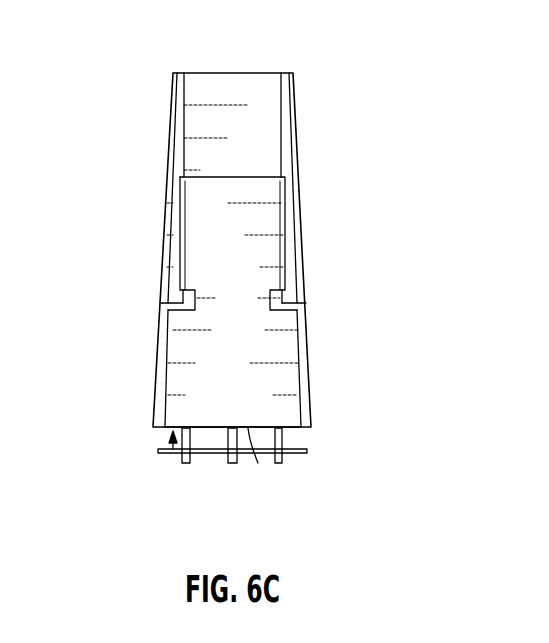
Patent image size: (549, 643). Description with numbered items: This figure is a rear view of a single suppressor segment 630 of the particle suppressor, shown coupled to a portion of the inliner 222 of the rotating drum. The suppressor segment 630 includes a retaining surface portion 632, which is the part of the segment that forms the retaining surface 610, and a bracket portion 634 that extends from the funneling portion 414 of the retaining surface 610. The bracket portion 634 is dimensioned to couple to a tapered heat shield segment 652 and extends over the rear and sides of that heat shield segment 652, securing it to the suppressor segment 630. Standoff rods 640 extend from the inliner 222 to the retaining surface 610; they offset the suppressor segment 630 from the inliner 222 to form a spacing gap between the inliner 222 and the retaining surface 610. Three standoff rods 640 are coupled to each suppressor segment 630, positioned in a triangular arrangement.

The suppressor segment 630 is at (112, 64).
The heat shield segment 652 is at (265, 143).
The bracket portion 634 is at (265, 257).
The funneling portion 414 is at (280, 375).
The inliner 222 is at (158, 452).
The retaining surface 610 is at (170, 453).
The standoff rods 640 is at (232, 465).
The retaining surface portion 632 is at (258, 463).